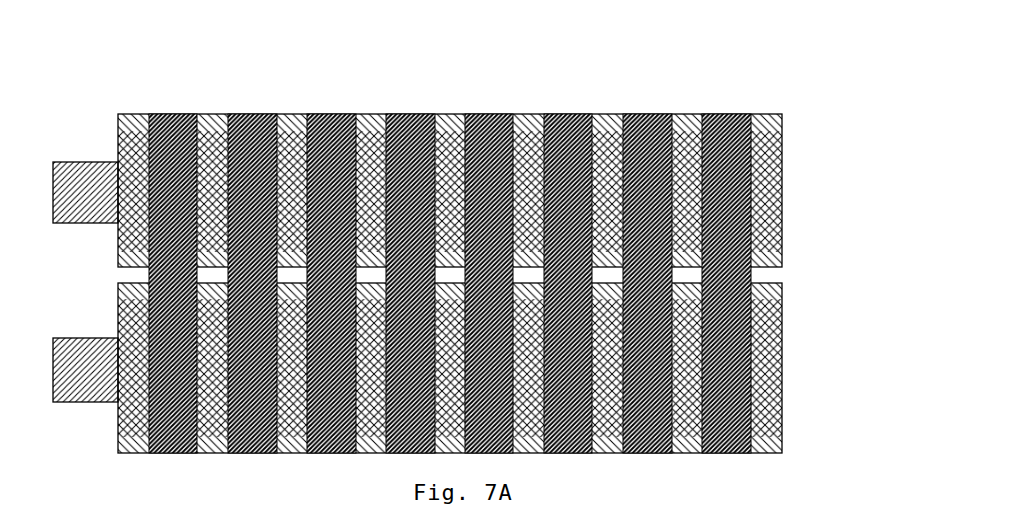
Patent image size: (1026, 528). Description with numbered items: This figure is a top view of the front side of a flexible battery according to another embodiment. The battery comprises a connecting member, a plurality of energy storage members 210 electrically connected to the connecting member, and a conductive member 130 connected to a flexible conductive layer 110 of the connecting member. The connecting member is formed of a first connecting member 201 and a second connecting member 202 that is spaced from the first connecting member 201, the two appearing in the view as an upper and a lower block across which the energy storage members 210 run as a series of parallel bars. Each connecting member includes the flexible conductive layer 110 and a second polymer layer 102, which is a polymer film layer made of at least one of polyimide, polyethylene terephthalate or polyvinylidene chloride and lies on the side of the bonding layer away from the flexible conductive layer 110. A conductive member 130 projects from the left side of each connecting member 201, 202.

The second polymer layer 102 is at (765, 114).
The flexible conductive layer 110 is at (781, 190).
The conductive member 130 is at (88, 162).
The first connecting member 201 is at (792, 255).
The second connecting member 202 is at (793, 293).
The energy storage member 210 is at (498, 122).